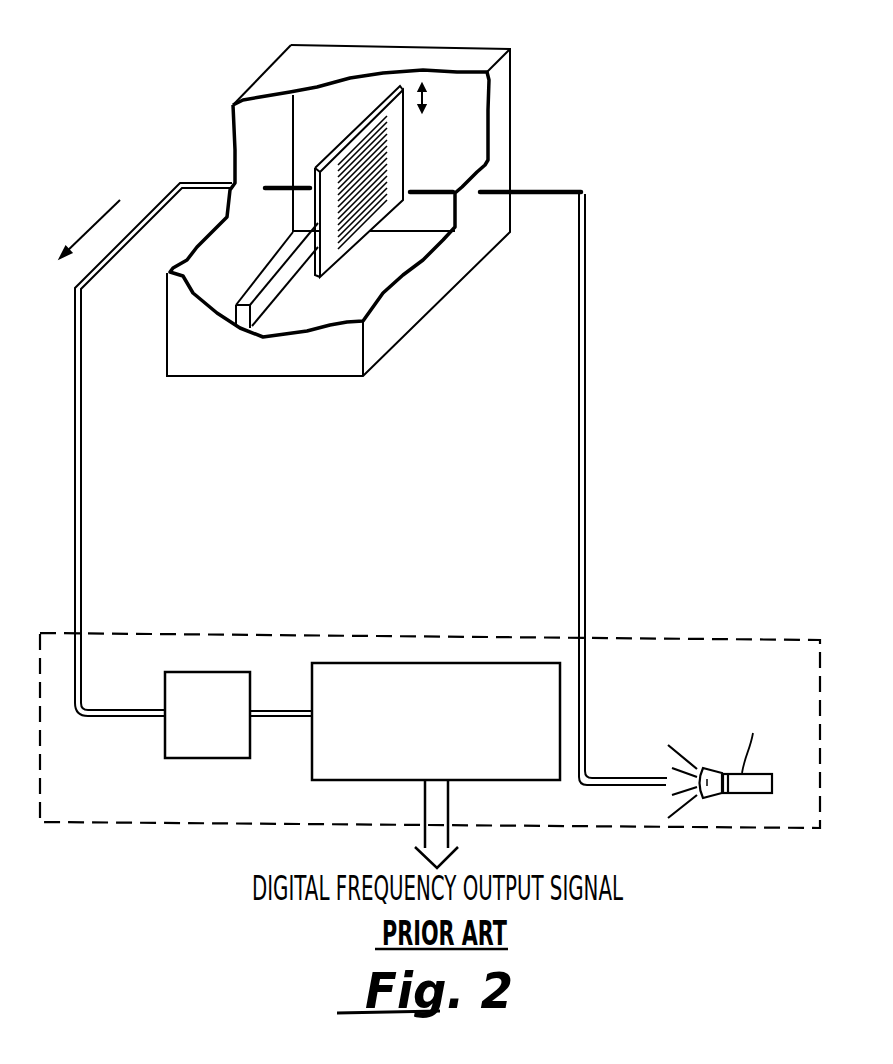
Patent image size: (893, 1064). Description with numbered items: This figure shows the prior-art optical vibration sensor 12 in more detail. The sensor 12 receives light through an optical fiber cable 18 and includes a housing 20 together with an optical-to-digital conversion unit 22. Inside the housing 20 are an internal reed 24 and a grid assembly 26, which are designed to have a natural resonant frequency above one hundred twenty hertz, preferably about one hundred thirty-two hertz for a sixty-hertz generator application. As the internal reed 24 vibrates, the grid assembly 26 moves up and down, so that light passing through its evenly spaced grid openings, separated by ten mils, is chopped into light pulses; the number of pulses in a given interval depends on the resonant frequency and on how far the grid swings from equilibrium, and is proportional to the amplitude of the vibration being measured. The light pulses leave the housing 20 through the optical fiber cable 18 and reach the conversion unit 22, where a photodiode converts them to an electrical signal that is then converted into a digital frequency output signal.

The optical vibration sensor 12 is at (203, 138).
The optical fiber cable 18 is at (82, 482).
The housing 20 is at (462, 47).
The optical-to-digital conversion unit 22 is at (668, 637).
The internal reed 24 is at (290, 268).
The grid assembly 26 is at (405, 122).